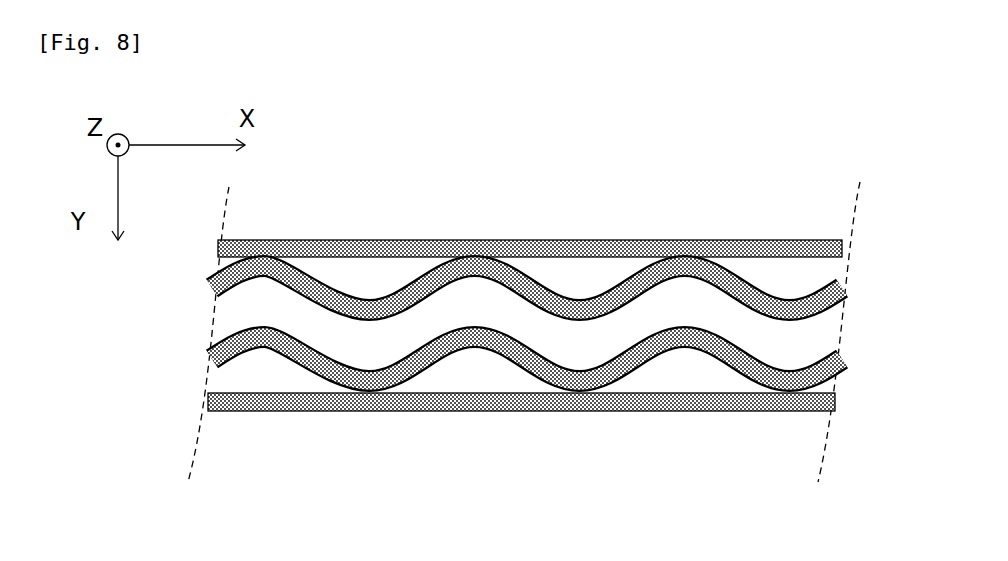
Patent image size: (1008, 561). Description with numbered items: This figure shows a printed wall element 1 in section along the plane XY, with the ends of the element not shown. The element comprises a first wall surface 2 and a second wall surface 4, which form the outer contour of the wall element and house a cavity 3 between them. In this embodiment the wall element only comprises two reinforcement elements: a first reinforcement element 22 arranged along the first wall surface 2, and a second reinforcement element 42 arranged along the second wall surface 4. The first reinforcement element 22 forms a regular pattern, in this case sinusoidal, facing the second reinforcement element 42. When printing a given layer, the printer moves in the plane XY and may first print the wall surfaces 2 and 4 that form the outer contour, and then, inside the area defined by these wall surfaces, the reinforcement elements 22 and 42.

The laminate 1 is at (524, 311).
The first wall surface 2 is at (760, 248).
The first reinforcement element 22 is at (325, 283).
The cavity 3 is at (567, 346).
The second wall surface 4 is at (688, 397).
The second reinforcement element 42 is at (330, 372).